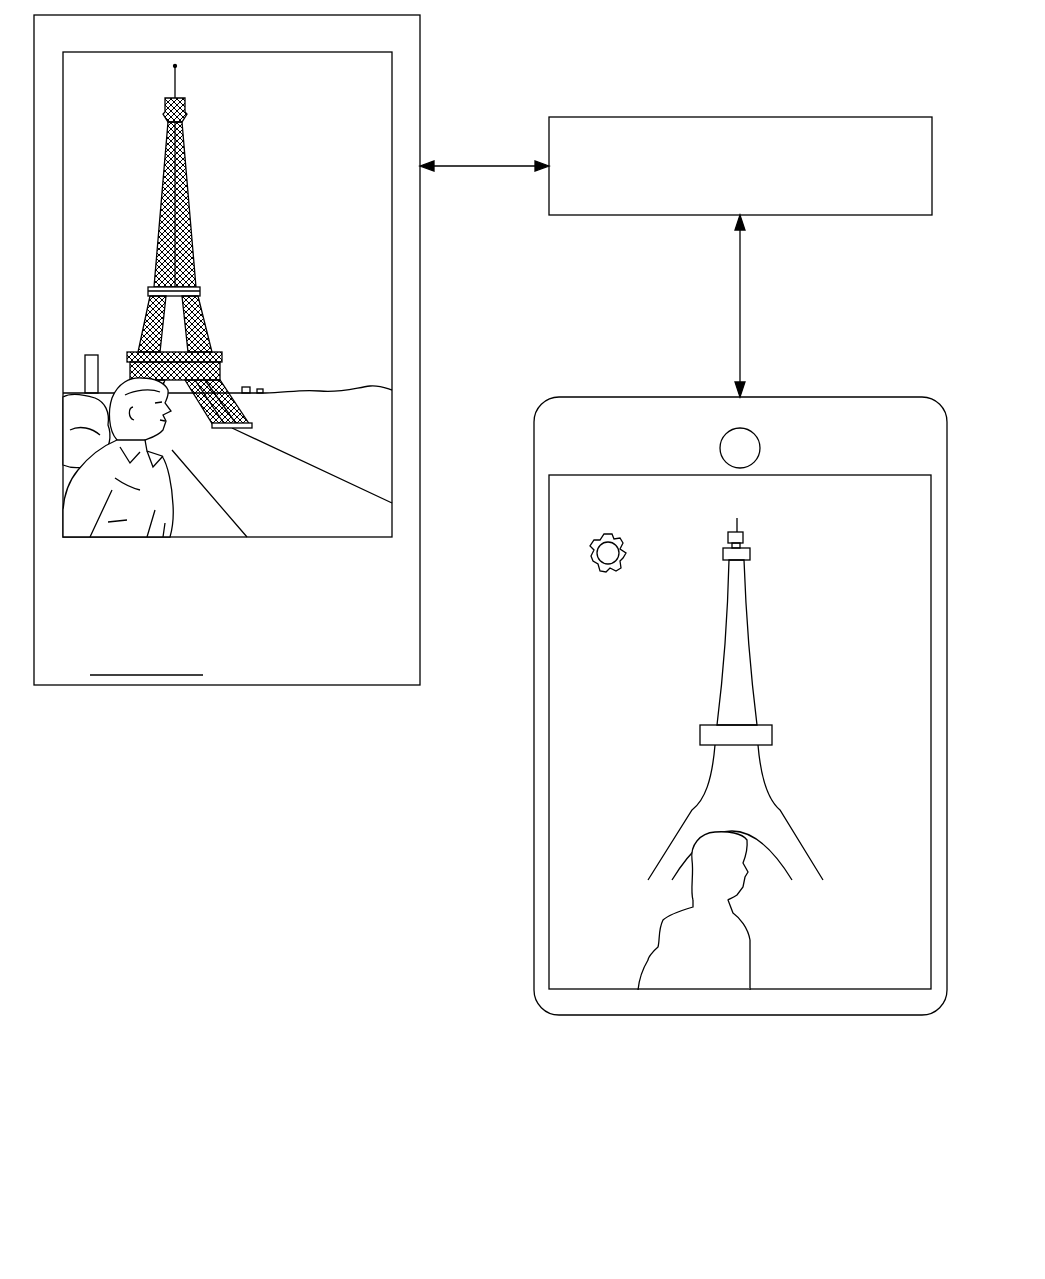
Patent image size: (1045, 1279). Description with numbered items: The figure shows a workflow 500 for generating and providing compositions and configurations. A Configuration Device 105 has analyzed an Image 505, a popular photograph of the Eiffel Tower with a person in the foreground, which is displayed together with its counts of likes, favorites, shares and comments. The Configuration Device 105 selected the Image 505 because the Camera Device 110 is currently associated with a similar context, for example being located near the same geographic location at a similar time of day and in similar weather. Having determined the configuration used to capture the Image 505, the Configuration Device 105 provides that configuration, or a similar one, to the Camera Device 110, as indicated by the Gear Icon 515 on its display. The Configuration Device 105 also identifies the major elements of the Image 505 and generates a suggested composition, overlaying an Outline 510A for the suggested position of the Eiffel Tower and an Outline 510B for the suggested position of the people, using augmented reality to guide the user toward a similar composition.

The workflow 500 is at (814, 52).
The image 505 is at (420, 84).
The configuration device 105 is at (740, 166).
The camera device 110 is at (534, 775).
The outline 510A is at (747, 648).
The outline 510B is at (750, 938).
The gear icon 515 is at (608, 574).